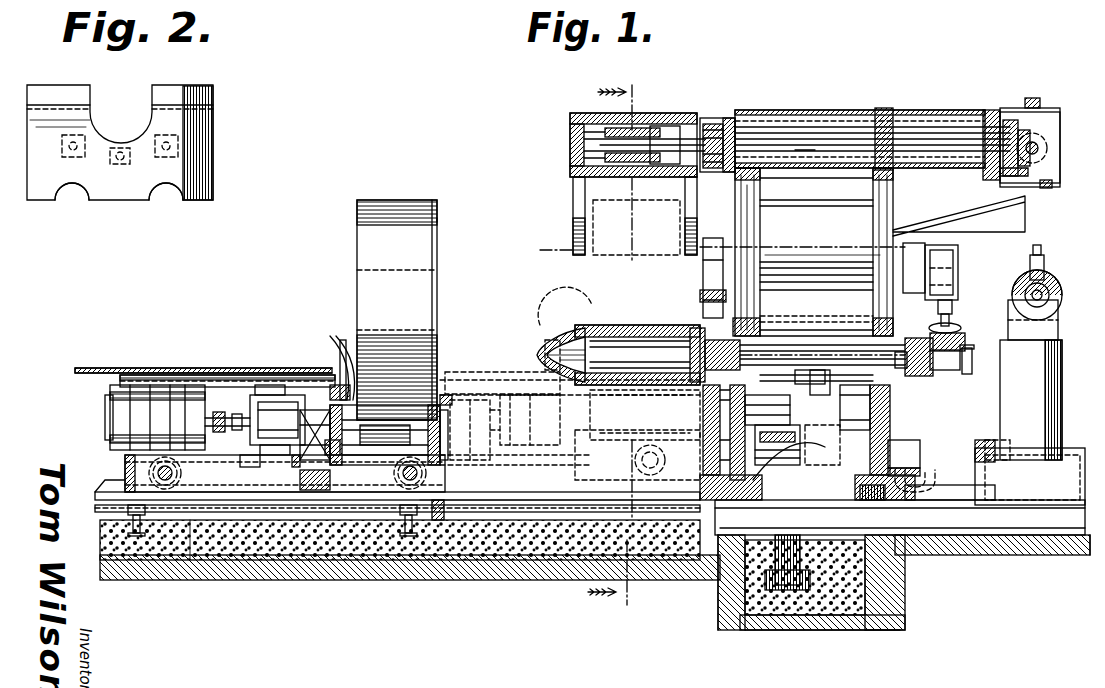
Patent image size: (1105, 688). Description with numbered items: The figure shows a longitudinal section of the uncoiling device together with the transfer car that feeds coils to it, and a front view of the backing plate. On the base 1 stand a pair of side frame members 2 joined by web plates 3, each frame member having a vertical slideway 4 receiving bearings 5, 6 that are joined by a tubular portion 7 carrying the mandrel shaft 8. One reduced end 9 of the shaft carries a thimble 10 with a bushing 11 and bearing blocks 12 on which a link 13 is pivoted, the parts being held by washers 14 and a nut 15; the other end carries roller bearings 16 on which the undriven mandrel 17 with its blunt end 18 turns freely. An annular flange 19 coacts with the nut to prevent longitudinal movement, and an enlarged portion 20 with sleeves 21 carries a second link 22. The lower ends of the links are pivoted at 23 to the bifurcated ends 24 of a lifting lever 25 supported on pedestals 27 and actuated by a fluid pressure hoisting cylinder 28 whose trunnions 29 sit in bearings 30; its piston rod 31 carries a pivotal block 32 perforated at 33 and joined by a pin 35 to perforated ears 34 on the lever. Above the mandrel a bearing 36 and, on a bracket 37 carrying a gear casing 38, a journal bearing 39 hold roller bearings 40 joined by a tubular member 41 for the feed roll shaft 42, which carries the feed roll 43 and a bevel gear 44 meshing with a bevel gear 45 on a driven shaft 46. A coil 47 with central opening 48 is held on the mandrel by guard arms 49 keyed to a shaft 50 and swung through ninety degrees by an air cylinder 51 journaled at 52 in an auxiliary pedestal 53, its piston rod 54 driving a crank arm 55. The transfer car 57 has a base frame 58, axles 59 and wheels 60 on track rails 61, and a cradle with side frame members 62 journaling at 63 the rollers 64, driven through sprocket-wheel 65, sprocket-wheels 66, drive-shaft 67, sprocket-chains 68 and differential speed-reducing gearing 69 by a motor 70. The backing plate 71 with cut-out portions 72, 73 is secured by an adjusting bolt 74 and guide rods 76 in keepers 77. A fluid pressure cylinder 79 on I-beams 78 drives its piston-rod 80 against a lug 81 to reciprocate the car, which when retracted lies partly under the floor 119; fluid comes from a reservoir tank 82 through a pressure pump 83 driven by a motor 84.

In FIG. 1, the base 1 is at (897, 496).
In FIG. 1, the side frame members 2 is at (875, 107).
In FIG. 1, the web plates 3 is at (811, 112).
In FIG. 1, the vertical slideway 4 is at (877, 200).
In FIG. 1, the bearing 5 is at (756, 345).
In FIG. 1, the bearing 6 is at (847, 334).
In FIG. 1, the tubular portion 7 is at (800, 332).
In FIG. 1, the mandrel shaft 8 is at (842, 322).
In FIG. 1, the reduced end of mandrel shaft 9 is at (851, 387).
In FIG. 1, the thimble 10 is at (855, 424).
In FIG. 1, the bushing 11 is at (930, 363).
In FIG. 1, the bearing blocks 12 is at (947, 297).
In FIG. 1, the link 13 is at (913, 307).
In FIG. 1, the washers 14 is at (955, 328).
In FIG. 1, the nut 15 is at (942, 362).
In FIG. 1, the roller bearings 16 is at (684, 338).
In FIG. 1, the mandrel 17 is at (668, 366).
In FIG. 1, the blunt end 18 is at (540, 351).
In FIG. 1, the annular flange 19 is at (632, 383).
In FIG. 1, the enlarged portion 20 is at (722, 364).
In FIG. 1, the sleeves 21 is at (792, 421).
In FIG. 1, the link 22 is at (720, 430).
In FIG. 1, the pivot 23 is at (797, 490).
In FIG. 1, the bifurcated ends 24 is at (726, 456).
In FIG. 1, the lifting lever 25 is at (808, 337).
In FIG. 1, the pedestals 27 is at (712, 237).
In FIG. 1, the fluid pressure hoisting cylinder 28 is at (835, 555).
In FIG. 1, the trunnions 29 is at (820, 452).
In FIG. 1, the bearings 30 is at (810, 488).
In FIG. 1, the piston rod 31 is at (832, 384).
In FIG. 1, the pivotal block 32 is at (817, 370).
In FIG. 1, the perforation 33 is at (803, 318).
In FIG. 1, the perforated ears 34 is at (790, 262).
In FIG. 1, the pin 35 is at (821, 337).
In FIG. 1, the bearing 36 is at (728, 118).
In FIG. 1, the bracket 37 is at (937, 127).
In FIG. 1, the gear casing 38 is at (1040, 104).
In FIG. 1, the journal bearing 39 is at (985, 118).
In FIG. 1, the roller bearings 40 is at (708, 125).
In FIG. 1, the tubular member 41 is at (868, 155).
In FIG. 1, the feed roll shaft 42 is at (902, 143).
In FIG. 1, the feed roll 43 is at (590, 115).
In FIG. 1, the bevel gear 44 is at (1017, 172).
In FIG. 1, the bevel gear 45 is at (1052, 128).
In FIG. 1, the driven shaft 46 is at (1040, 148).
In FIG. 1, the coil 47 is at (560, 202).
In FIG. 1, the central opening 48 is at (425, 295).
In FIG. 1, the guard arms 49 is at (690, 202).
In FIG. 1, the shaft 50 is at (641, 271).
In FIG. 1, the air cylinder 51 is at (960, 345).
In FIG. 1, the trunnion journals 52 is at (958, 360).
In FIG. 1, the auxiliary pedestal 53 is at (965, 437).
In FIG. 1, the piston rod 54 is at (950, 316).
In FIG. 1, the crank arm 55 is at (952, 302).
In FIG. 1, the transfer car 57 is at (362, 484).
In FIG. 1, the base frame 58 is at (124, 477).
In FIG. 1, the transverse axles 59 is at (172, 476).
In FIG. 1, the wheels 60 is at (124, 499).
In FIG. 1, the track rails 61 is at (578, 514).
In FIG. 1, the side frame members of cradle 62 is at (265, 535).
In FIG. 1, the journals 63 is at (438, 420).
In FIG. 1, the rollers 64 is at (403, 410).
In FIG. 1, the sprocket-wheel 65 is at (253, 460).
In FIG. 1, the sprocket-wheels 66 is at (310, 408).
In FIG. 1, the drive-shaft 67 is at (208, 421).
In FIG. 1, the sprocket-chains 68 is at (258, 432).
In FIG. 1, the differential speed-reducing gearing 69 is at (257, 408).
In FIG. 1, the motor 70 is at (124, 404).
In FIG. 2, the backing plate 71 is at (210, 138).
In FIG. 1, the backing plate 71 is at (343, 330).
In FIG. 2, the cut-out portions 72 is at (170, 198).
In FIG. 1, the cut-out portions 72 is at (343, 455).
In FIG. 2, the cut-out portion 73 is at (135, 93).
In FIG. 1, the adjusting bolt 74 is at (268, 384).
In FIG. 1, the guide rods 76 is at (197, 374).
In FIG. 1, the keepers 77 is at (243, 374).
In FIG. 1, the I-beams 78 is at (133, 546).
In FIG. 1, the fluid pressure cylinder 79 is at (200, 520).
In FIG. 1, the piston-rod 80 is at (440, 505).
In FIG. 1, the lug 81 is at (455, 504).
In FIG. 1, the reservoir tank 82 is at (1044, 445).
In FIG. 1, the pressure pump 83 is at (1042, 277).
In FIG. 1, the motor 84 is at (1066, 306).
In FIG. 1, the floor of the mill 119 is at (118, 359).